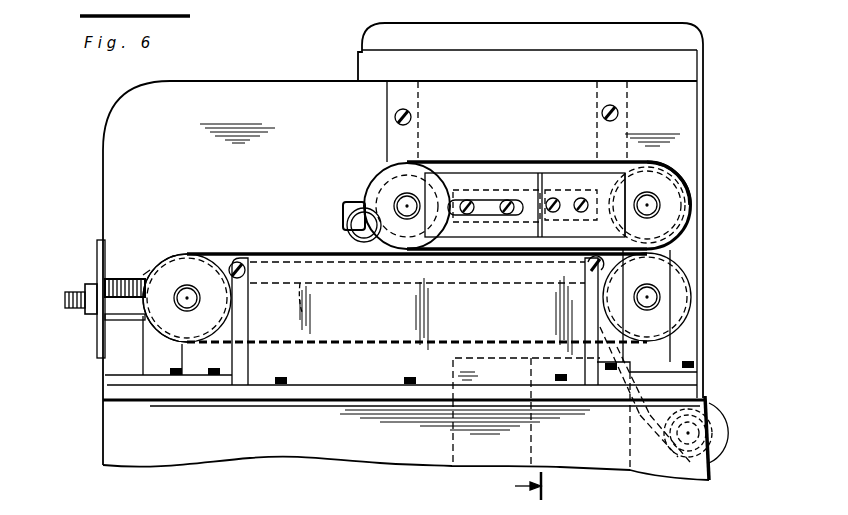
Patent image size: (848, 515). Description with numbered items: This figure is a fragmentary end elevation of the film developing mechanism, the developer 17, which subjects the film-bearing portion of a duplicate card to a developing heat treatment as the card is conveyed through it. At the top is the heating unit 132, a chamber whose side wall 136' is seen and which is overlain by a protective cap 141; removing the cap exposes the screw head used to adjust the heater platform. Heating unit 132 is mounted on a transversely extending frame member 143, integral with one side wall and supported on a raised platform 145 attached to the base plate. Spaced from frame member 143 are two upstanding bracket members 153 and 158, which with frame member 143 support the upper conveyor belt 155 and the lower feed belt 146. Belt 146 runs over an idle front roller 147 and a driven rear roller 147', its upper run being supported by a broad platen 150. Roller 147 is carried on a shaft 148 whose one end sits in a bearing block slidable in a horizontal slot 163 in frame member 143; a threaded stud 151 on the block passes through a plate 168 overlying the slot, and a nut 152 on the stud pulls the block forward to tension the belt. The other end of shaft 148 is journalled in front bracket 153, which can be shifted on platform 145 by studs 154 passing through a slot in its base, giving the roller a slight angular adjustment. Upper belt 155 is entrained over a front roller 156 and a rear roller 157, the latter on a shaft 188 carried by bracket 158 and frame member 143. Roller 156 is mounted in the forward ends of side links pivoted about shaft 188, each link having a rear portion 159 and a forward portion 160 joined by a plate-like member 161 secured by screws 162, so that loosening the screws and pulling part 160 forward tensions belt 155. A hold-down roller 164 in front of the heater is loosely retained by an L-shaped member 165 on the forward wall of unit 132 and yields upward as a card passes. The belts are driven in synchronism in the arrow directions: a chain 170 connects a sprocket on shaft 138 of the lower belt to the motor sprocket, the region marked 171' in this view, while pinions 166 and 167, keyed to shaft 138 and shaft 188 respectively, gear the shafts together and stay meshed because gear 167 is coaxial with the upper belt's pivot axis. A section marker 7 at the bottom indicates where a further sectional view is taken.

The protective cap 141 is at (455, 25).
The heating unit 132 is at (358, 75).
The frame member 143 is at (112, 120).
The developer 17 is at (710, 102).
The shaft 188 is at (678, 166).
The rear portion of side link 159 is at (587, 167).
The side wall 136' is at (382, 122).
The screws 162 is at (503, 202).
The plate-like member 161 is at (548, 190).
The forward portion of side link 160 is at (443, 177).
The upper conveyor belt 155 is at (507, 162).
The front roller 156 is at (376, 178).
The L-shaped member 165 is at (349, 202).
The hold-down roller 164 is at (351, 231).
The lower feed belt 146 is at (282, 253).
The plate 168 is at (100, 263).
The threaded stud 151 is at (117, 292).
The horizontal slot 163 is at (147, 274).
The nut 152 is at (67, 302).
The shaft 148 is at (203, 303).
The supporting platen 150 is at (302, 307).
The idle front roller 147 is at (187, 311).
The studs 154 is at (165, 373).
The front bracket member 153 is at (192, 362).
The raised platform 145 is at (275, 395).
The rear roller 157 is at (692, 199).
The pinion 167 is at (700, 220).
The driven rear roller 147' is at (689, 294).
The shaft 138 is at (654, 296).
The pinion 166 is at (703, 314).
The rear bracket member 158 is at (660, 355).
The chain 170 is at (715, 395).
The roller 171' is at (678, 455).
The section line 7 is at (535, 486).